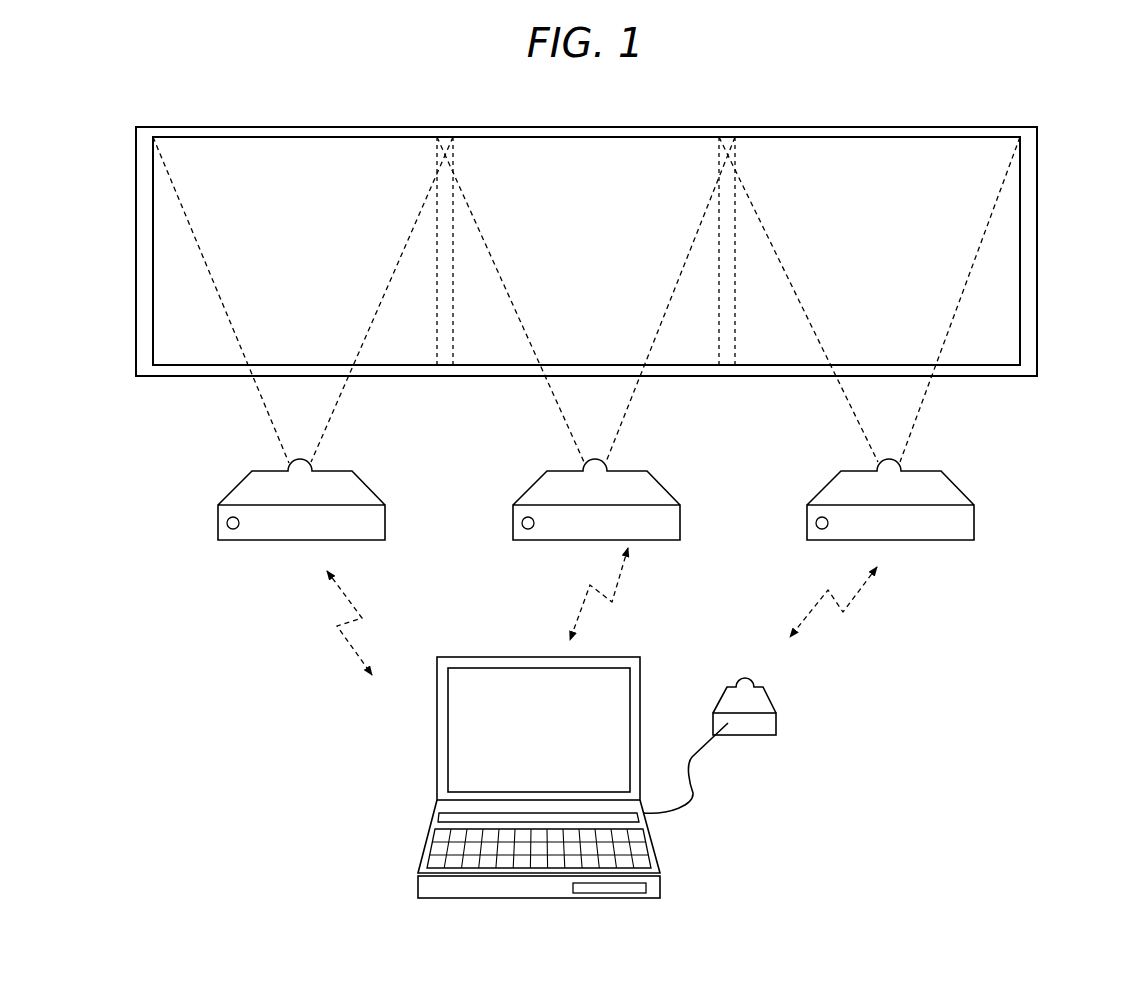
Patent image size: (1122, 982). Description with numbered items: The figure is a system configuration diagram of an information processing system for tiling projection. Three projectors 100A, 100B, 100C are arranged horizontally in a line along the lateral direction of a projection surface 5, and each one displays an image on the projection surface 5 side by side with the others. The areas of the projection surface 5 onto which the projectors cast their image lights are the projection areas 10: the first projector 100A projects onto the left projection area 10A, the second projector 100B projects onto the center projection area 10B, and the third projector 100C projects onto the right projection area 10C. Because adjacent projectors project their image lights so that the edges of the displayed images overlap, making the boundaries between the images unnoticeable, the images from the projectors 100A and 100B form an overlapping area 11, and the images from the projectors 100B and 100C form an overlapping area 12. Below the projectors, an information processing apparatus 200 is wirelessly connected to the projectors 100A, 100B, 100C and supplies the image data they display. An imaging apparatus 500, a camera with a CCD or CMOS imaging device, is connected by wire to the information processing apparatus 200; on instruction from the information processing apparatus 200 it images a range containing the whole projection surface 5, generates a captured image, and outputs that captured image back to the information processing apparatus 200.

The projection surface 5 is at (505, 127).
The projection areas 10 is at (382, 124).
The left projection area 10A is at (265, 136).
The center projection area 10B is at (612, 137).
The right projection area 10C is at (905, 137).
The overlapping area 11 is at (445, 355).
The overlapping area 12 is at (729, 355).
The projector 100A is at (333, 477).
The projector 100B is at (628, 477).
The projector 100C is at (922, 477).
The information processing apparatus 200 is at (463, 657).
The imaging apparatus 500 is at (772, 700).